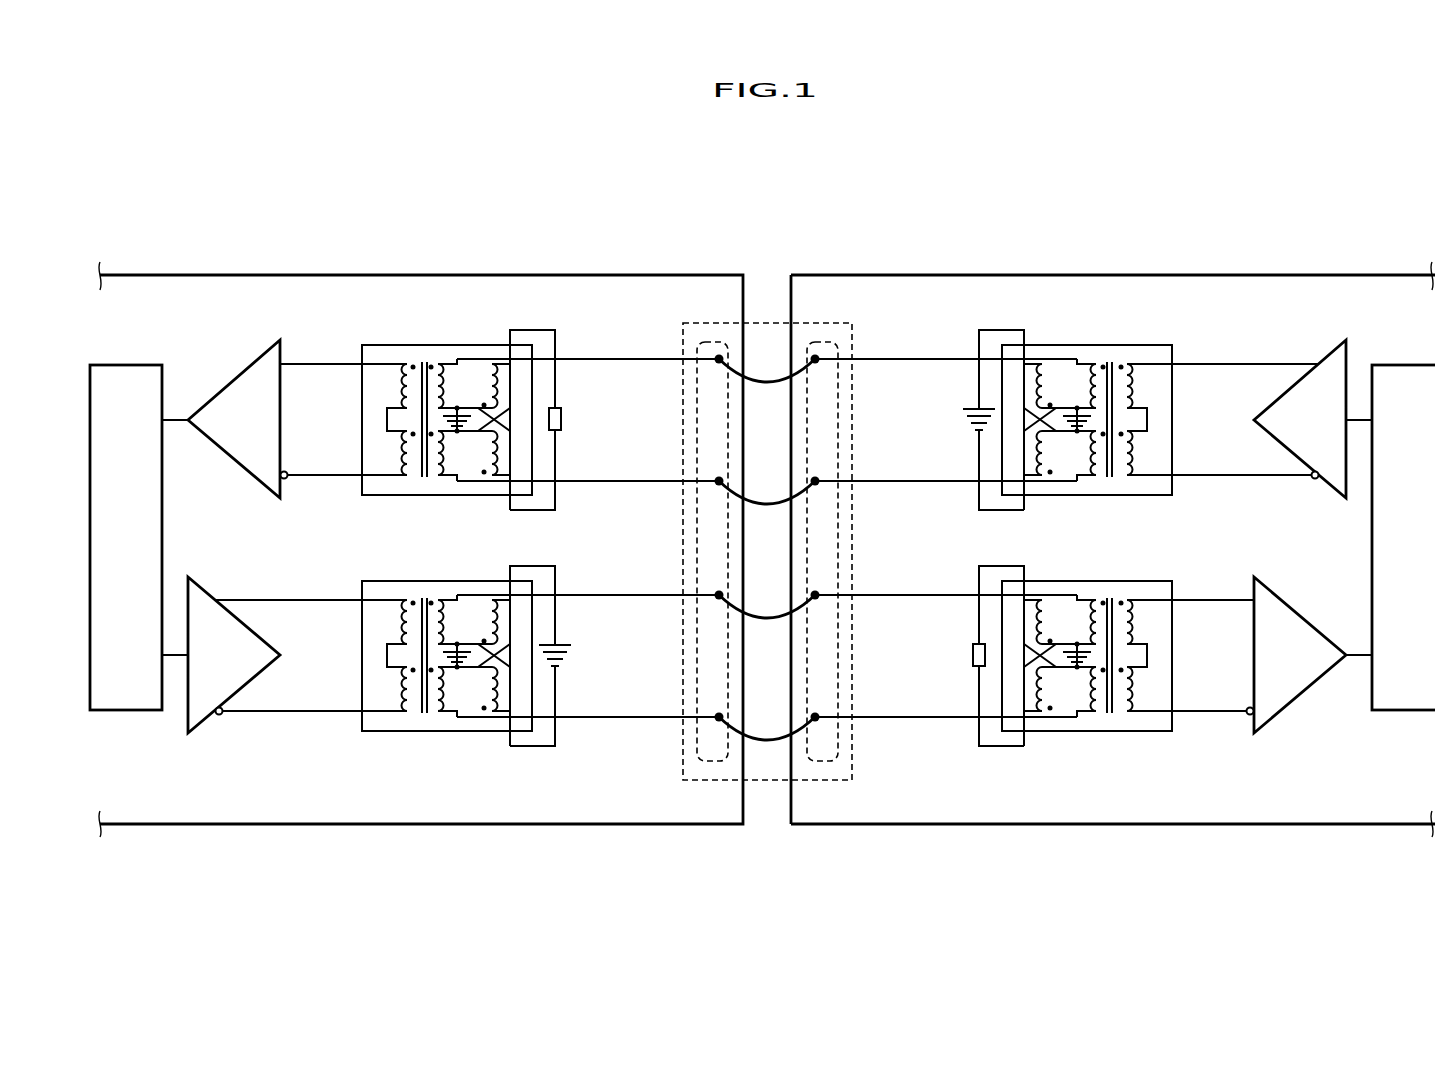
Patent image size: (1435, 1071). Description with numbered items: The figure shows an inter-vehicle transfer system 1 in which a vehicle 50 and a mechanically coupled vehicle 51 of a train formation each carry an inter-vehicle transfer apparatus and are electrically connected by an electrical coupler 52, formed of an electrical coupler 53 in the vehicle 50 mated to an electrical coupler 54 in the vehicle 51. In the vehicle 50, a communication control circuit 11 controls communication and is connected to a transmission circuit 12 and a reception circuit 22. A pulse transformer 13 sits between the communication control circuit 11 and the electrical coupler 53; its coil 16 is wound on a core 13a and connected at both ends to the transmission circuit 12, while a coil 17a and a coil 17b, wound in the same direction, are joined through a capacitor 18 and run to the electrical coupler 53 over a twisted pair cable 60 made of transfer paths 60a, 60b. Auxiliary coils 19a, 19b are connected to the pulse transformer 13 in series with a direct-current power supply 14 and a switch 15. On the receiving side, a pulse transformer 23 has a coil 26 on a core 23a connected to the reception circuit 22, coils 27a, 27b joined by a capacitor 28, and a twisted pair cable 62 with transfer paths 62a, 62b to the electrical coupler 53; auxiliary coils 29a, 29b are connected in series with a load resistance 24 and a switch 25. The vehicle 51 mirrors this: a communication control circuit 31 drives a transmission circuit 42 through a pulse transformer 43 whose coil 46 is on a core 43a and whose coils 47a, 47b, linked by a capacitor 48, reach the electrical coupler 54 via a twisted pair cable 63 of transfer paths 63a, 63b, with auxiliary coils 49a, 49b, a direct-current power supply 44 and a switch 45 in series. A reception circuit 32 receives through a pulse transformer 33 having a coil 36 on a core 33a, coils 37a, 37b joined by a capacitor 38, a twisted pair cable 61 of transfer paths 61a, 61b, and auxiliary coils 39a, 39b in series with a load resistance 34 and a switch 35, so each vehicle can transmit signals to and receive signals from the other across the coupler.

The inter-vehicle transfer system 1 is at (800, 223).
The communication control circuit 11 is at (106, 366).
The transmission circuit 12 is at (207, 590).
The pulse transformer 13 is at (380, 581).
The core 13a is at (400, 718).
The direct-current power supply 14 is at (574, 655).
The switch 15 is at (523, 566).
The coil 16 is at (401, 613).
The coil 17a is at (449, 614).
The coil 17b is at (446, 713).
The capacitor 18 is at (462, 644).
The auxiliary coil 19a is at (498, 612).
The auxiliary coil 19b is at (498, 682).
The reception circuit 22 is at (265, 352).
The pulse transformer 23 is at (380, 345).
The core 23a is at (400, 482).
The load resistance 24 is at (566, 419).
The switch 25 is at (523, 330).
The coil 26 is at (401, 376).
The coil 27a is at (449, 378).
The coil 27b is at (446, 477).
The capacitor 28 is at (462, 408).
The auxiliary coil 29a is at (498, 376).
The auxiliary coil 29b is at (498, 446).
The communication control circuit 31 is at (1389, 366).
The reception circuit 32 is at (1327, 590).
The pulse transformer 33 is at (1154, 581).
The core 33a is at (1134, 718).
The load resistance 34 is at (968, 655).
The switch 35 is at (992, 566).
The coil 36 is at (1133, 612).
The coil 37a is at (1085, 614).
The coil 37b is at (1088, 713).
The capacitor 38 is at (1072, 644).
The auxiliary coil 39a is at (1036, 612).
The auxiliary coil 39b is at (1036, 682).
The transmission circuit 42 is at (1332, 352).
The pulse transformer 43 is at (1154, 345).
The core 43a is at (1134, 482).
The direct-current power supply 44 is at (962, 417).
The switch 45 is at (996, 330).
The coil 46 is at (1133, 376).
The coil 47a is at (1085, 378).
The coil 47b is at (1088, 477).
The capacitor 48 is at (1072, 408).
The auxiliary coil 49a is at (1036, 376).
The auxiliary coil 49b is at (1036, 446).
The vehicle 50 is at (253, 275).
The vehicle 51 is at (1237, 275).
The electrical coupler 52 is at (763, 323).
The electrical coupler 53 is at (710, 763).
The electrical coupler 54 is at (817, 763).
The twisted pair cable 60 is at (680, 536).
The transfer path 60a is at (607, 594).
The transfer path 60b is at (657, 716).
The twisted pair cable 61 is at (947, 536).
The transfer path 61a is at (923, 594).
The transfer path 61b is at (877, 716).
The twisted pair cable 62 is at (680, 237).
The transfer path 62a is at (607, 358).
The transfer path 62b is at (657, 480).
The twisted pair cable 63 is at (947, 237).
The transfer path 63a is at (923, 358).
The transfer path 63b is at (877, 480).